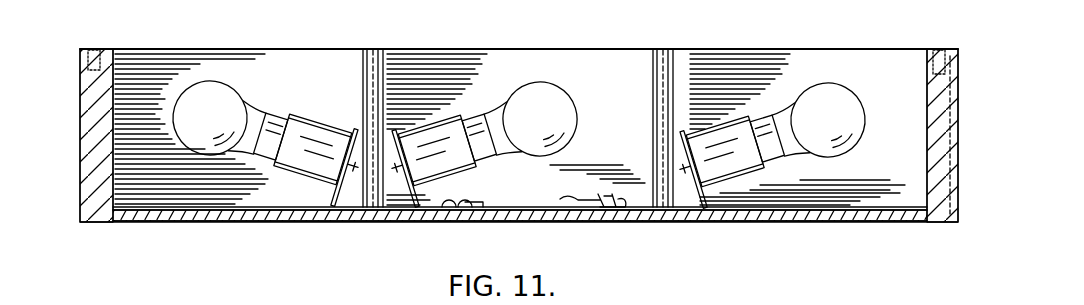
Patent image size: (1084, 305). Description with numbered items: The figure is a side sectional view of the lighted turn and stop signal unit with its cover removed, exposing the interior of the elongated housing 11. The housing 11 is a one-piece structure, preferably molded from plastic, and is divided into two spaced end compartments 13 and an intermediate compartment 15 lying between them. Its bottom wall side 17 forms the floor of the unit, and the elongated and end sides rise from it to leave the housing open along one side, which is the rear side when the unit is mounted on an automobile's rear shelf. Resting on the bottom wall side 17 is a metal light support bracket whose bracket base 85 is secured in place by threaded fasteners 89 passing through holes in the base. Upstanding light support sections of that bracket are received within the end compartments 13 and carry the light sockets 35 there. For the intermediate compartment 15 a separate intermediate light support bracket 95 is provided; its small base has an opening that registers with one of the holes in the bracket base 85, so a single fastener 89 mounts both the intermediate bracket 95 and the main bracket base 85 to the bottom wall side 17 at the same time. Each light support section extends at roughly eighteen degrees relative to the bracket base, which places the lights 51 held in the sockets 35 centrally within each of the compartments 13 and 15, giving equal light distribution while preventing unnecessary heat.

The elongated housing 11 is at (963, 156).
The end compartments 13 is at (190, 66).
The intermediate compartment 15 is at (590, 86).
The bottom wall side 17 is at (873, 208).
The light sockets 35 is at (317, 128).
The lights 51 is at (218, 118).
The bracket base 85 is at (507, 217).
The threaded fasteners 89 is at (470, 208).
The intermediate light support bracket 95 is at (413, 198).